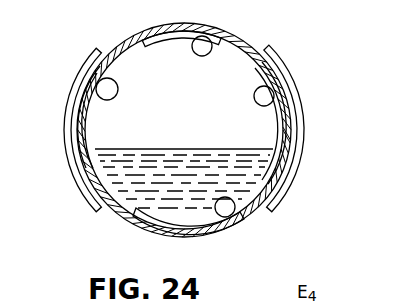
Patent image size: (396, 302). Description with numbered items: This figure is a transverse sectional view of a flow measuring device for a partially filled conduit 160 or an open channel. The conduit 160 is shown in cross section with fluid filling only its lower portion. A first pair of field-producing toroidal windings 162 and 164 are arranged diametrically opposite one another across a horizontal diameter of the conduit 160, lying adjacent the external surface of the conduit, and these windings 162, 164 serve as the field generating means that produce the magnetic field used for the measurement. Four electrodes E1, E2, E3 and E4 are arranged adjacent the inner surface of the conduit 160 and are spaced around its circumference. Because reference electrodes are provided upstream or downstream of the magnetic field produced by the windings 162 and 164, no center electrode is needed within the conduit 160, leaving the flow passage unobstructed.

The partially filled conduit 160 is at (264, 42).
The field-producing toroidal winding 162 is at (70, 99).
The field-producing toroidal winding 164 is at (302, 127).
The electrode E1 is at (112, 76).
The electrode E2 is at (272, 88).
The electrode E3 is at (232, 207).
The electrode E4 is at (200, 53).